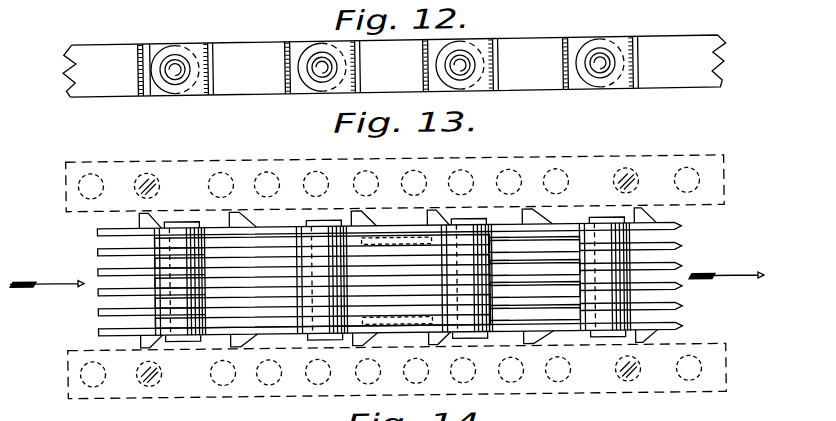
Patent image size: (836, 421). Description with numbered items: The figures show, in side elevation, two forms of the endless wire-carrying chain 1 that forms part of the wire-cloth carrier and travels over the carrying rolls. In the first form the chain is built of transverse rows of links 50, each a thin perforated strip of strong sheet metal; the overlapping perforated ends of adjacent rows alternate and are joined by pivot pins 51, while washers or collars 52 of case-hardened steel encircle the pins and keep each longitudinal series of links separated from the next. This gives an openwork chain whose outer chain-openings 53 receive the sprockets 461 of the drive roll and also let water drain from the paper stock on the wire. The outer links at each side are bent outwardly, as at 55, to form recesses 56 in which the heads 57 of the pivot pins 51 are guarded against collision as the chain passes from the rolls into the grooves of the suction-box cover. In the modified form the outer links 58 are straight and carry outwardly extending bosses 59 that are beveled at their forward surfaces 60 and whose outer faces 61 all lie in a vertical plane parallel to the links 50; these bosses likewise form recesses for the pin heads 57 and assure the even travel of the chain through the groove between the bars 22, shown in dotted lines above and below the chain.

In FIG. 12, the wire-carrying chain 1 is at (413, 65).
In FIG. 13, the wire-carrying chain 1 is at (387, 260).
In FIG. 13, the bars 22 is at (658, 170).
In FIG. 13, the links 50 is at (510, 256).
In FIG. 12, the pivot pins 51 is at (178, 62).
In FIG. 13, the washers or collars 52 is at (297, 263).
In FIG. 12, the outer chain-openings 53 is at (551, 24).
In FIG. 12, the outwardly bent portions of outer links 55 is at (385, 47).
In FIG. 12, the recesses 56 is at (152, 47).
In FIG. 12, the heads of the pivot pins 57 is at (167, 38).
In FIG. 13, the heads of the pivot pins 57 is at (600, 220).
In FIG. 13, the outer links 58 is at (417, 232).
In FIG. 13, the bosses 59 is at (352, 338).
In FIG. 13, the beveled forward surfaces 60 is at (253, 221).
In FIG. 13, the outer faces 61 is at (238, 211).
In FIG. 12, the sprockets 461 is at (224, 36).
In FIG. 13, the sprockets 461 is at (387, 236).